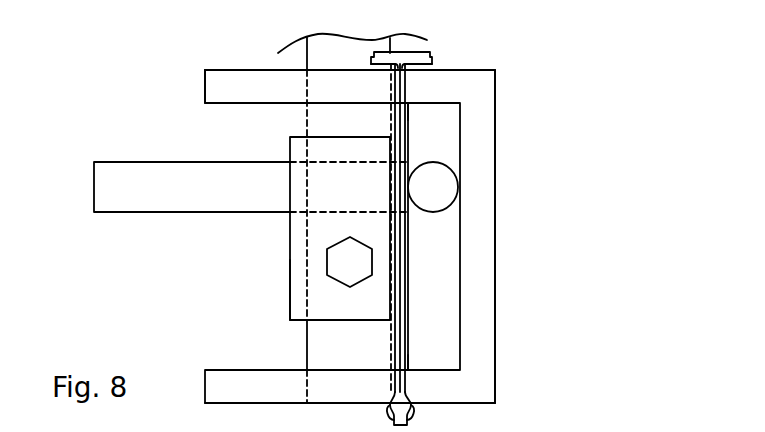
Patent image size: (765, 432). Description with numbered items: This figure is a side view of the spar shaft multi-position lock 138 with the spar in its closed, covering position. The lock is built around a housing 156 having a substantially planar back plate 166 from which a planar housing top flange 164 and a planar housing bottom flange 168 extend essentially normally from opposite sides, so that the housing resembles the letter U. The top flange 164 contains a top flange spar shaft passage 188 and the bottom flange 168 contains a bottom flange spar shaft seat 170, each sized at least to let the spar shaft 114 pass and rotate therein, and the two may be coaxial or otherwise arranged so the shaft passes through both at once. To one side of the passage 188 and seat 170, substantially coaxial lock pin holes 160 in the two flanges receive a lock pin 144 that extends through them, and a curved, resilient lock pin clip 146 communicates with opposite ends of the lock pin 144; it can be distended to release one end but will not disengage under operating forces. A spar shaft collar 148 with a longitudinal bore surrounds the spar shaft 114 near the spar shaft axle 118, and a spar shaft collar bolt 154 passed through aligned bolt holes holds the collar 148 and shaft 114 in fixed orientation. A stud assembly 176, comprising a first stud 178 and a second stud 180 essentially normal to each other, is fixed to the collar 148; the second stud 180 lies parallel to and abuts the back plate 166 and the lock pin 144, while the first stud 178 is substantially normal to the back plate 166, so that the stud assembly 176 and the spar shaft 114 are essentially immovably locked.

The spar shaft 114 is at (307, 120).
The spar shaft axle 118 is at (333, 350).
The spar shaft multi-position lock 138 is at (495, 75).
The lock pin 144 is at (430, 54).
The lock pin clip 146 is at (403, 267).
The spar shaft collar 148 is at (305, 283).
The spar shaft collar bolt 154 is at (343, 262).
The housing 156 is at (205, 82).
The lock pin holes 160 is at (410, 85).
The housing top flange 164 is at (205, 92).
The back plate 166 is at (482, 335).
The housing bottom flange 168 is at (205, 382).
The bottom flange spar shaft seat 170 is at (307, 385).
The stud assembly 176 is at (413, 162).
The first stud 178 is at (164, 215).
The second stud 180 is at (440, 187).
The top flange spar shaft passage 188 is at (307, 90).